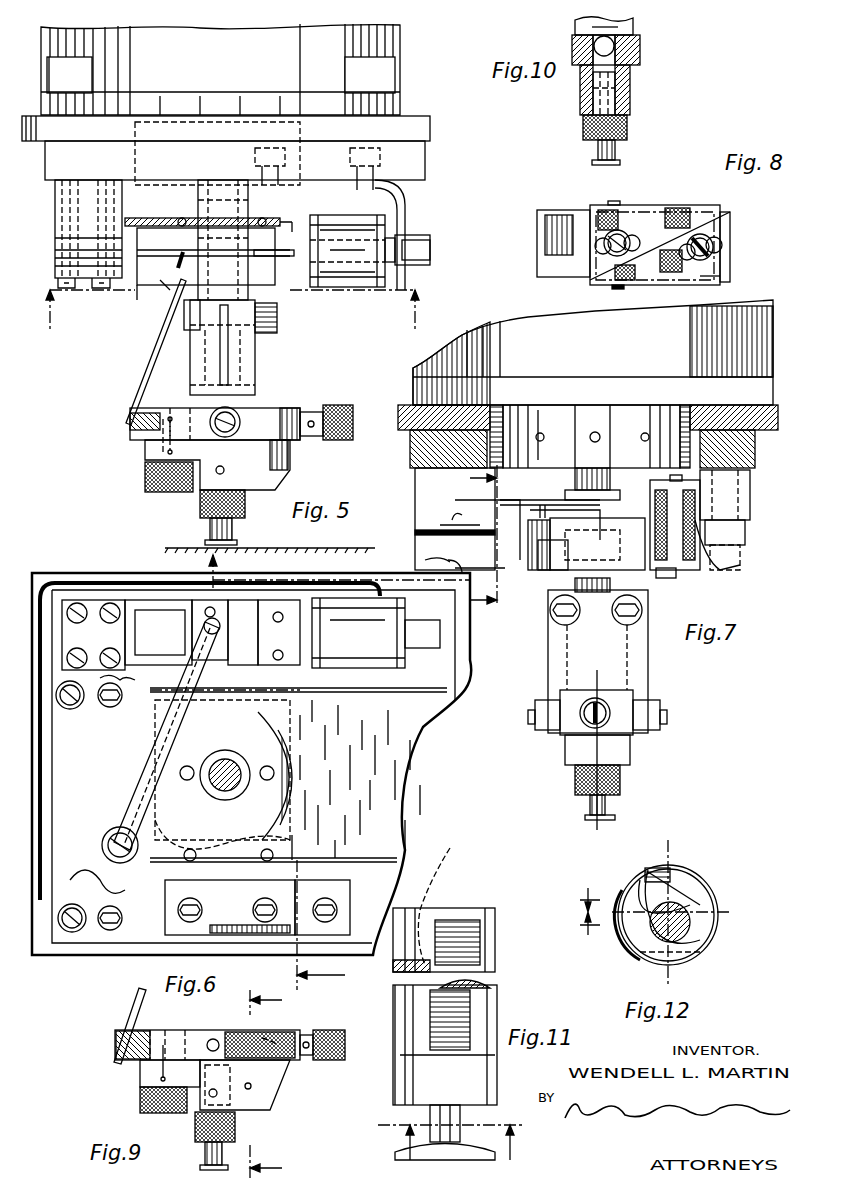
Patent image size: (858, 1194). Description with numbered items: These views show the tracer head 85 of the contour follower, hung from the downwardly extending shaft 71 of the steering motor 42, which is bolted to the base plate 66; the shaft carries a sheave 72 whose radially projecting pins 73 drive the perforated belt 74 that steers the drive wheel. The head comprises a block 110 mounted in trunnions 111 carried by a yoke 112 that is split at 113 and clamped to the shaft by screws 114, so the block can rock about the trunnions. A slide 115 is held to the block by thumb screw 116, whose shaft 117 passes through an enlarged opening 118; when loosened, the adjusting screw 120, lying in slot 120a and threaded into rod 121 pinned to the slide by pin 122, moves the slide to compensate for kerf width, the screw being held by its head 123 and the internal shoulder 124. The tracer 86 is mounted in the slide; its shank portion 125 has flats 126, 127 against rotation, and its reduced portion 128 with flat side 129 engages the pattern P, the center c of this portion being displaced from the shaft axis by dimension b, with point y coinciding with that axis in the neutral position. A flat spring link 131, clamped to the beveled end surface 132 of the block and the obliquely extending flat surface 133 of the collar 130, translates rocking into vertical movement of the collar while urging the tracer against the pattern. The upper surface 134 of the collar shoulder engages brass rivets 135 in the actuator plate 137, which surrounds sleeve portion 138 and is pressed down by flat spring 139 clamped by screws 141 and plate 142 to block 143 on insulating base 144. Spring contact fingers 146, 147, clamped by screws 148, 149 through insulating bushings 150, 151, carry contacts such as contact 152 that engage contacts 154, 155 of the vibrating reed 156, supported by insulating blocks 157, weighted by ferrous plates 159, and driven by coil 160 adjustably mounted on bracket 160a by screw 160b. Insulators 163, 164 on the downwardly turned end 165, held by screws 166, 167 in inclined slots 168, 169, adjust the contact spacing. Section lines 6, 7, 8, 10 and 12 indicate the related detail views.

In FIG. 5, the steering motor 42 is at (385, 40).
In FIG. 7, the steering motor 42 is at (522, 340).
In FIG. 7, the base plate 66 is at (405, 404).
In FIG. 5, the shaft of the steering motor 71 is at (243, 292).
In FIG. 7, the shaft of the steering motor 71 is at (578, 478).
In FIG. 6, the shaft of the steering motor 71 is at (215, 790).
In FIG. 5, the sheave 72 is at (160, 124).
In FIG. 7, the sheave 72 is at (530, 405).
In FIG. 6, the sheave 72 is at (300, 800).
In FIG. 5, the radially projecting pins 73 is at (128, 150).
In FIG. 5, the perforated belt 74 is at (140, 148).
In FIG. 7, the perforated belt 74 is at (690, 405).
In FIG. 6, the perforated belt 74 is at (330, 862).
In FIG. 5, the tracer head 85 is at (140, 452).
In FIG. 5, the tracer 86 is at (210, 530).
In FIG. 10, the tracer 86 is at (626, 138).
In FIG. 7, the tracer 86 is at (620, 795).
In FIG. 9, the tracer 86 is at (235, 1140).
In FIG. 11, the tracer 86 is at (480, 1085).
In FIG. 5, the block 110 is at (275, 412).
In FIG. 10, the block 110 is at (640, 38).
In FIG. 7, the block 110 is at (625, 722).
In FIG. 9, the block 110 is at (195, 1030).
In FIG. 5, the trunnions 111 is at (212, 412).
In FIG. 7, the trunnions 111 is at (668, 720).
In FIG. 5, the yoke 112 is at (250, 366).
In FIG. 7, the yoke 112 is at (648, 660).
In FIG. 5, the split 113 is at (228, 348).
In FIG. 5, the screws 114 is at (277, 320).
In FIG. 7, the screws 114 is at (642, 604).
In FIG. 5, the slide 115 is at (290, 460).
In FIG. 10, the slide 115 is at (630, 108).
In FIG. 7, the slide 115 is at (630, 758).
In FIG. 9, the slide 115 is at (275, 1075).
In FIG. 5, the thumb screw 116 is at (145, 485).
In FIG. 9, the thumb screw 116 is at (140, 1100).
In FIG. 9, the shaft of the thumb screw 117 is at (155, 1065).
In FIG. 9, the enlarged opening 118 is at (140, 1080).
In FIG. 10, the adjusting screw 120 is at (630, 20).
In FIG. 9, the adjusting screw 120 is at (280, 1030).
In FIG. 10, the slot 120a is at (590, 40).
In FIG. 10, the rod 121 is at (630, 72).
In FIG. 9, the rod 121 is at (240, 1033).
In FIG. 10, the pin 122 is at (628, 90).
In FIG. 9, the pin 122 is at (255, 1090).
In FIG. 5, the head 123 is at (338, 405).
In FIG. 7, the head 123 is at (610, 700).
In FIG. 9, the head 123 is at (330, 1062).
In FIG. 9, the internal shoulder 124 is at (295, 1025).
In FIG. 11, the shank portion 125 is at (410, 1080).
In FIG. 12, the shank portion 125 is at (645, 935).
In FIG. 11, the flat 126 is at (465, 1010).
In FIG. 12, the flat 126 is at (700, 860).
In FIG. 11, the flat 127 is at (452, 902).
In FIG. 12, the flat 127 is at (640, 958).
In FIG. 5, the reduced portion 128 is at (240, 540).
In FIG. 10, the reduced portion 128 is at (620, 155).
In FIG. 7, the reduced portion 128 is at (592, 818).
In FIG. 9, the reduced portion 128 is at (200, 1168).
In FIG. 11, the reduced portion 128 is at (430, 1120).
In FIG. 12, the reduced portion 128 is at (690, 920).
In FIG. 12, the flat side 129 is at (645, 885).
In FIG. 5, the collar 130 is at (271, 262).
In FIG. 7, the collar 130 is at (597, 544).
In FIG. 5, the link 131 is at (158, 350).
In FIG. 10, the link 131 is at (580, 22).
In FIG. 7, the link 131 is at (565, 698).
In FIG. 9, the link 131 is at (140, 1000).
In FIG. 5, the beveled end surface 132 is at (130, 425).
In FIG. 5, the obliquely extending flat surface 133 is at (185, 262).
In FIG. 5, the upper surface of shoulder 134 is at (213, 256).
In FIG. 7, the upper surface of shoulder 134 is at (542, 555).
In FIG. 6, the upper surface of shoulder 134 is at (225, 792).
In FIG. 5, the brass rivets 135 is at (264, 219).
In FIG. 7, the brass rivets 135 is at (590, 500).
In FIG. 6, the brass rivets 135 is at (267, 781).
In FIG. 5, the actuator plate 137 is at (150, 217).
In FIG. 8, the actuator plate 137 is at (548, 212).
In FIG. 7, the actuator plate 137 is at (536, 543).
In FIG. 6, the actuator plate 137 is at (295, 748).
In FIG. 5, the sleeve portion 138 is at (188, 206).
In FIG. 6, the sleeve portion 138 is at (245, 760).
In FIG. 7, the flat spring 139 is at (745, 565).
In FIG. 6, the flat spring 139 is at (280, 878).
In FIG. 7, the screws 141 is at (742, 550).
In FIG. 6, the screws 141 is at (265, 922).
In FIG. 7, the plate 142 is at (748, 525).
In FIG. 6, the plate 142 is at (230, 915).
In FIG. 7, the block 143 is at (745, 490).
In FIG. 5, the insulating base 144 is at (190, 158).
In FIG. 7, the insulating base 144 is at (750, 445).
In FIG. 8, the spring contact finger 146 is at (610, 200).
In FIG. 7, the spring contact finger 146 is at (488, 505).
In FIG. 8, the spring contact finger 147 is at (612, 287).
In FIG. 7, the spring contact finger 147 is at (612, 290).
In FIG. 6, the spring contact finger 147 is at (170, 742).
In FIG. 7, the screw 148 is at (675, 520).
In FIG. 7, the screw 149 is at (680, 578).
In FIG. 6, the screw 149 is at (112, 885).
In FIG. 7, the insulating bushing 150 is at (650, 515).
In FIG. 7, the insulating bushing 151 is at (690, 572).
In FIG. 7, the contact 152 is at (452, 518).
In FIG. 7, the contact 154 is at (438, 522).
In FIG. 7, the contact 155 is at (425, 560).
In FIG. 5, the vibrating reed 156 is at (178, 265).
In FIG. 7, the vibrating reed 156 is at (416, 533).
In FIG. 6, the vibrating reed 156 is at (191, 632).
In FIG. 5, the insulating blocks 157 is at (58, 240).
In FIG. 7, the insulating blocks 157 is at (420, 474).
In FIG. 6, the insulating blocks 157 is at (210, 741).
In FIG. 5, the ferrous plates 159 is at (292, 270).
In FIG. 7, the ferrous plates 159 is at (458, 565).
In FIG. 6, the ferrous plates 159 is at (246, 632).
In FIG. 5, the coil 160 is at (358, 287).
In FIG. 6, the coil 160 is at (376, 633).
In FIG. 5, the bracket 160a is at (405, 215).
In FIG. 5, the screw 160b is at (432, 258).
In FIG. 8, the insulator 163 is at (728, 210).
In FIG. 7, the insulator 163 is at (525, 512).
In FIG. 8, the insulator 164 is at (710, 277).
In FIG. 7, the insulator 164 is at (518, 562).
In FIG. 6, the insulator 164 is at (150, 690).
In FIG. 8, the downwardly turned end 165 is at (725, 245).
In FIG. 7, the downwardly turned end 165 is at (505, 570).
In FIG. 6, the downwardly turned end 165 is at (242, 695).
In FIG. 8, the screw 166 is at (622, 230).
In FIG. 6, the screw 166 is at (175, 680).
In FIG. 8, the screw 167 is at (712, 258).
In FIG. 6, the screw 167 is at (290, 690).
In FIG. 8, the inclined slot 168 is at (638, 235).
In FIG. 8, the inclined slot 169 is at (720, 265).
In FIG. 5, the pattern P is at (340, 560).
In FIG. 12, the dimension b is at (585, 914).
In FIG. 12, the center c is at (695, 900).
In FIG. 12, the point y is at (705, 880).
In FIG. 5, the line 6— 6 is at (231, 288).
In FIG. 5, the line 7— 7 is at (339, 572).
In FIG. 6, the line 7— 7 is at (322, 925).
In FIG. 7, the section line 8- 8 is at (475, 542).
In FIG. 9, the line 10— 10 is at (274, 1085).
In FIG. 11, the line 12— 12 is at (444, 1142).